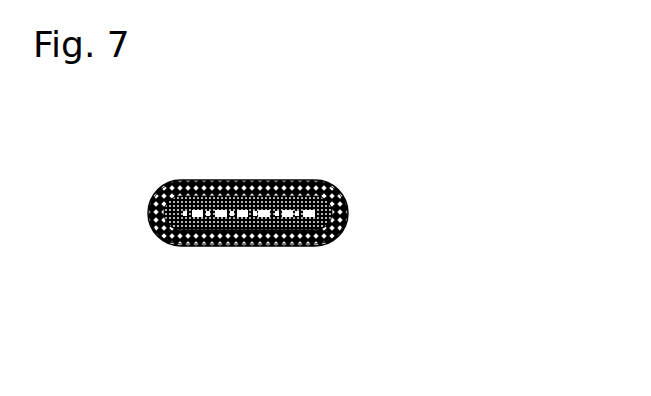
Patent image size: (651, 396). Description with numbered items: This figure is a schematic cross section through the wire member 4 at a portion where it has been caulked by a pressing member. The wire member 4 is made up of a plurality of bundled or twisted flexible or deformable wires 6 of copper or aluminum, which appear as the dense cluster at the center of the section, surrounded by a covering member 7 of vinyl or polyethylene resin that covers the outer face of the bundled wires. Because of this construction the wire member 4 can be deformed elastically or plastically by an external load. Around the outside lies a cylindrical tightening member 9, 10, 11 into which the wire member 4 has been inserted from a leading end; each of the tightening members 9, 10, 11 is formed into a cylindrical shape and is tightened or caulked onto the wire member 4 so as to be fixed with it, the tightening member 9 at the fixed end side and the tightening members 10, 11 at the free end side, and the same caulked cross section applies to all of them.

The wire member 4 is at (303, 247).
The wires 6 is at (193, 241).
The covering member 7 is at (343, 191).
The tightening member 9 is at (201, 188).
The tightening member 10 is at (197, 213).
The tightening members 11 is at (221, 213).